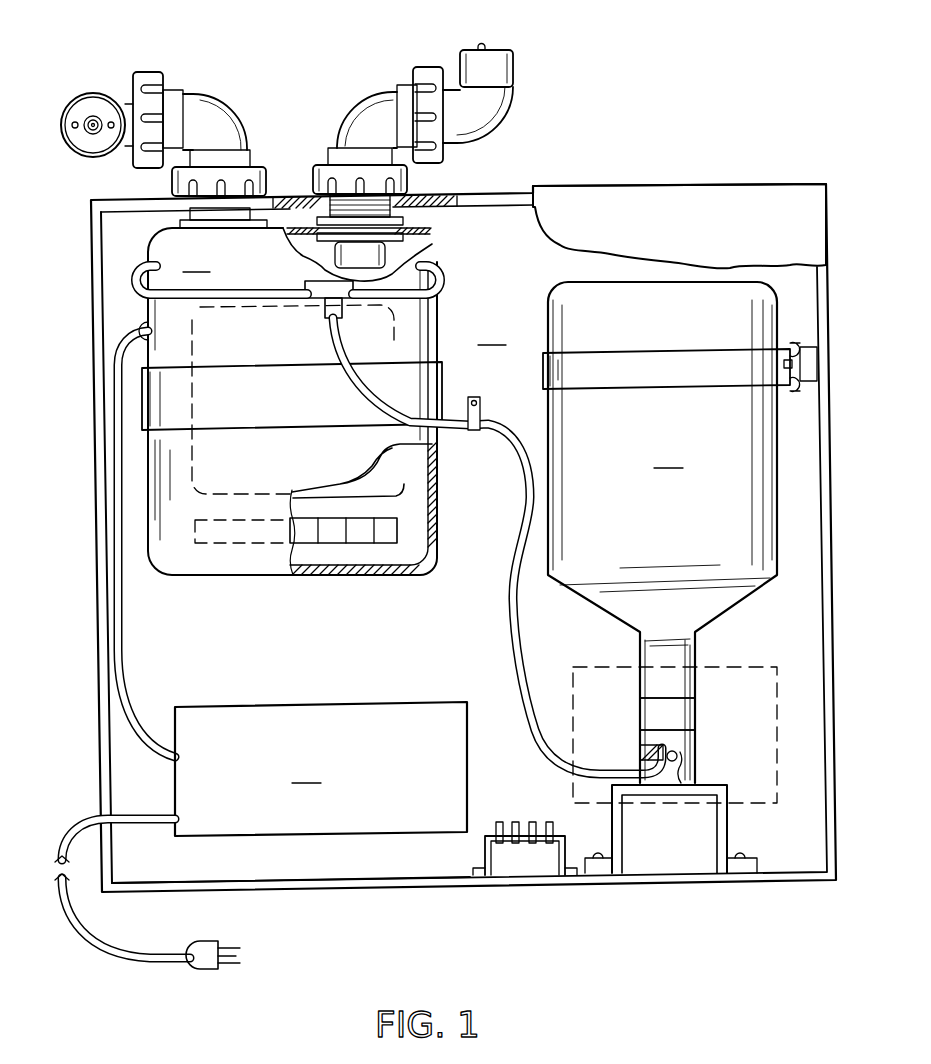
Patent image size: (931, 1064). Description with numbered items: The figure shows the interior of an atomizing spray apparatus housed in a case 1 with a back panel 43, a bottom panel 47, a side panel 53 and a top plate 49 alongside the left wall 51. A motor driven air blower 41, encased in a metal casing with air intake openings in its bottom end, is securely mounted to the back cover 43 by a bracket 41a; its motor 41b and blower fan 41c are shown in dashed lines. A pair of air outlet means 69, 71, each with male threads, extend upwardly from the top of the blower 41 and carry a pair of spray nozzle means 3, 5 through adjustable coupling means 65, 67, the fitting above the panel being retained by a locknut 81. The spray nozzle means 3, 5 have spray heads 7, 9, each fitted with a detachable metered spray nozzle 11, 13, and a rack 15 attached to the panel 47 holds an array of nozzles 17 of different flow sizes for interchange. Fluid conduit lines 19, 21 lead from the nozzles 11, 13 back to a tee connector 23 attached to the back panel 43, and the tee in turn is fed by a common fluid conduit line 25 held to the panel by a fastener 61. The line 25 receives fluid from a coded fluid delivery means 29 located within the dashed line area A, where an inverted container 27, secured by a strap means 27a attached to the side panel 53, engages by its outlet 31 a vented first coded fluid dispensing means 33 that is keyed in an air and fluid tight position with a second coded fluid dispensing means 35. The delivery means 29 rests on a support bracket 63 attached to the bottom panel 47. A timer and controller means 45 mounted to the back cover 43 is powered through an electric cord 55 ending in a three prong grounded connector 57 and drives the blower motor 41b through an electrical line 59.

The case 1 is at (845, 690).
The spray nozzle means 3 is at (373, 94).
The spray nozzle means 5 is at (210, 94).
The spray head 7 is at (504, 56).
The spray head 9 is at (78, 110).
The detachable metered spray nozzle 11 is at (481, 46).
The detachable metered spray nozzle 13 is at (96, 114).
The rack 15 is at (485, 852).
The array of nozzles 17 is at (558, 816).
The fluid conduit line 19 is at (444, 270).
The fluid conduit line 21 is at (130, 280).
The tee connector 23 is at (303, 278).
The common fluid conduit line 25 is at (507, 428).
The container 27 is at (662, 532).
The strap means 27a is at (680, 367).
The coded fluid delivery means 29 is at (630, 697).
The container outlet 31 is at (688, 690).
The first coded fluid dispensing means 33 is at (693, 721).
The second coded fluid dispensing means 35 is at (693, 753).
The motor driven air blower 41 is at (292, 401).
The bracket 41a is at (292, 396).
The motor 41b is at (392, 472).
The blower fan 41c is at (397, 527).
The back panel 43 is at (493, 332).
The timer and controller means 45 is at (321, 769).
The bottom panel 47 is at (360, 878).
The top plate 49 is at (521, 196).
The side wall 51 is at (100, 547).
The side panel 53 is at (833, 424).
The electric cord 55 is at (118, 944).
The three prong grounded connector 57 is at (212, 966).
The electrical line 59 is at (122, 684).
The fastener 61 is at (477, 397).
The support bracket 63 is at (727, 831).
The adjustable coupling means 65 is at (413, 182).
The adjustable coupling means 67 is at (172, 190).
The air outlet means 69 is at (393, 212).
The air outlet means 71 is at (185, 216).
The locknut 81 is at (405, 236).
The dashed line area A is at (762, 664).